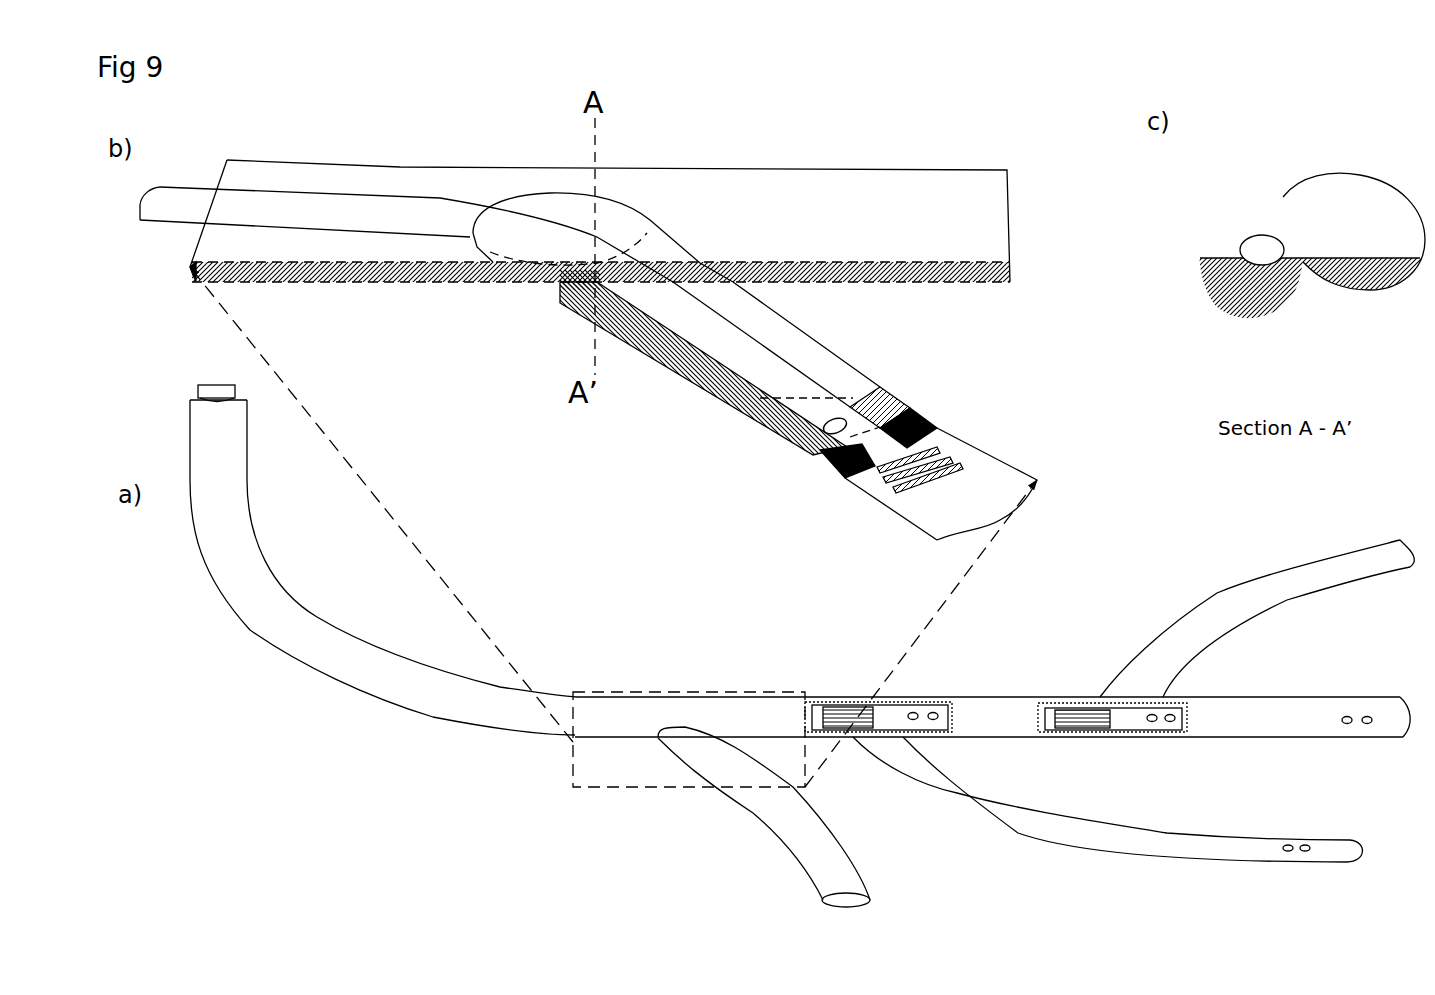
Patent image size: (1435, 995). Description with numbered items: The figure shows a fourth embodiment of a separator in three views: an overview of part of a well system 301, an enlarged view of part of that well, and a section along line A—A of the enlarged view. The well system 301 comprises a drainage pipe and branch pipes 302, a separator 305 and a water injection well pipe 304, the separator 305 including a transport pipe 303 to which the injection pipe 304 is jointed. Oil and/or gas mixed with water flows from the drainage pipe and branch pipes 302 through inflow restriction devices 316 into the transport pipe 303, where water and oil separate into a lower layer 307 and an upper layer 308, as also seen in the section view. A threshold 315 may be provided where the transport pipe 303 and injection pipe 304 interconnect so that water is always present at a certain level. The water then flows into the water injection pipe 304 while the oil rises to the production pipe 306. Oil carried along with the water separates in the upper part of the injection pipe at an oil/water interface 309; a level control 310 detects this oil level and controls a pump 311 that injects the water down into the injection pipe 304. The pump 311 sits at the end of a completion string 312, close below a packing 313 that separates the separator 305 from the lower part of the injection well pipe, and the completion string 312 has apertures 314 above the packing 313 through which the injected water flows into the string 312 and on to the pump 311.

The well system 301 is at (200, 553).
The drainage pipe and branch pipes 302 is at (1290, 698).
The transport pipe 303 is at (743, 178).
The water injection well pipe 304 is at (895, 520).
The separator 305 is at (277, 160).
The production pipe 306 is at (200, 383).
The lower layer 307 is at (957, 273).
The upper layer 308 is at (927, 223).
The oil/water interface 309 is at (870, 397).
The level control 310 is at (813, 385).
The pump 311 is at (883, 487).
The completion string 312 is at (353, 227).
The packing 313 is at (937, 430).
The apertures 314 is at (823, 425).
The threshold 315 is at (573, 277).
The inflow restriction devices 316 is at (1140, 725).